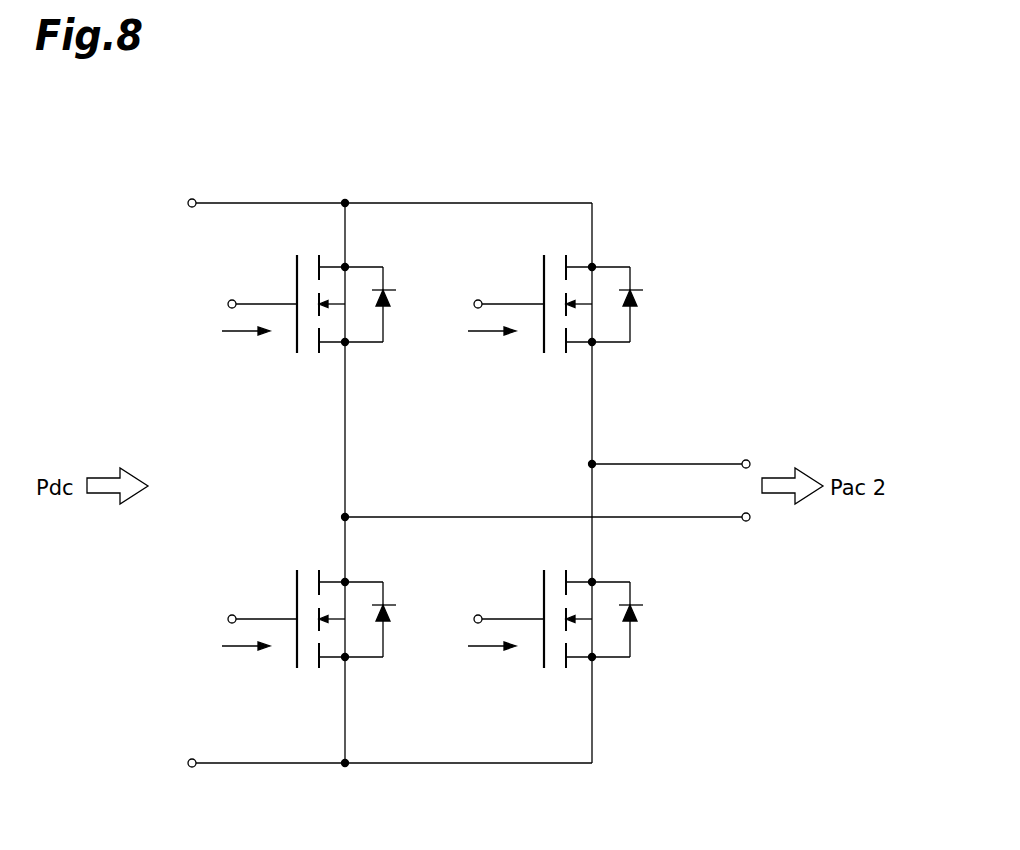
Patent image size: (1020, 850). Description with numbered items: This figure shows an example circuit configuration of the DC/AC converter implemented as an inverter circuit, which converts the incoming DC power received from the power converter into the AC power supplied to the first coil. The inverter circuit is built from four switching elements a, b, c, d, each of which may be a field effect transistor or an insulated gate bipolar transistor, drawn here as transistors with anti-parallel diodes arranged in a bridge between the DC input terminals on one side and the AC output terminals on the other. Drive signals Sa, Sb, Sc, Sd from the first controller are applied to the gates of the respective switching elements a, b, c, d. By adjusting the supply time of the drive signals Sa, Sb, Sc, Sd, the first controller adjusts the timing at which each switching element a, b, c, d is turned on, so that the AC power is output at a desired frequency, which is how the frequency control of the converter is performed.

The switching element a is at (362, 364).
The switching element b is at (362, 679).
The switching element c is at (609, 364).
The switching element d is at (609, 679).
The drive signal Sa is at (246, 344).
The drive signal Sb is at (246, 659).
The drive signal Sc is at (492, 344).
The drive signal Sd is at (492, 659).